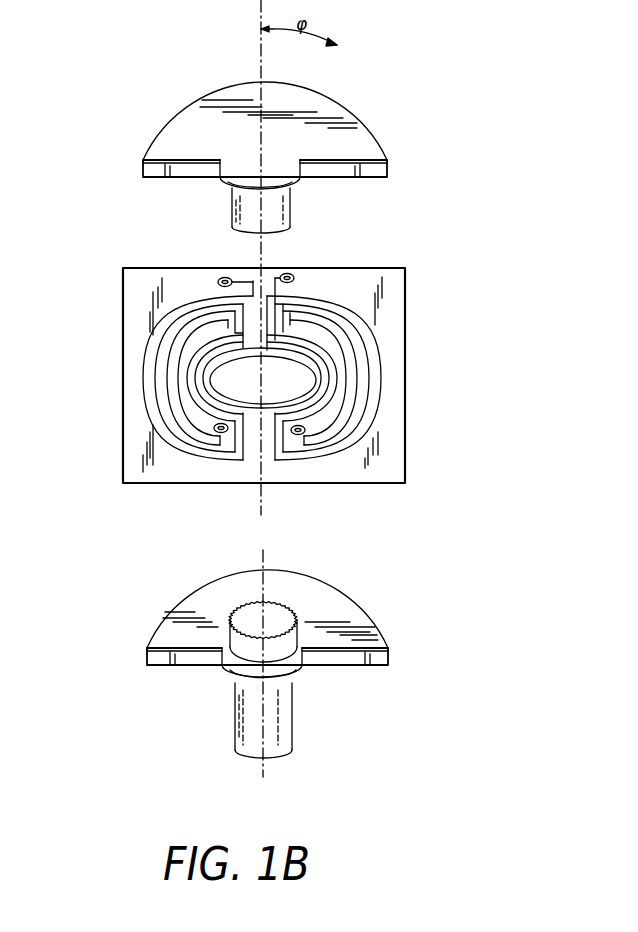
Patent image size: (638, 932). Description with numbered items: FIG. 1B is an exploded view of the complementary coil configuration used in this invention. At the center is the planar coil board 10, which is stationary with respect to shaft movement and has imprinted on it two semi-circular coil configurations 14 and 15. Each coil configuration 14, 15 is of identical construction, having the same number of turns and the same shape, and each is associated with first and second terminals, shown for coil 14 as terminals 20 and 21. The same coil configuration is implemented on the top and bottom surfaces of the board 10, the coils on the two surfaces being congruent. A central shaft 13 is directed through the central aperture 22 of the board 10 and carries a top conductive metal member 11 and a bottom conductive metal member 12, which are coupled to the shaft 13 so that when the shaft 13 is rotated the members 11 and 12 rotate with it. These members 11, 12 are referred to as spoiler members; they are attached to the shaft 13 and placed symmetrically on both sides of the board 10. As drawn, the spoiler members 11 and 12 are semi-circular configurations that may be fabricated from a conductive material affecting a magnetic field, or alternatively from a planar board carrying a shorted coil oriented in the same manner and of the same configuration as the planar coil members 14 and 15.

The board 10 is at (395, 415).
The top conductive metal member 11 is at (368, 132).
The bottom conductive metal member 12 is at (366, 630).
The central shaft 13 is at (290, 727).
The semi-circular coil configuration 14 is at (375, 360).
The semi-circular coil configuration 15 is at (150, 365).
The first terminal 20 is at (292, 274).
The second terminal 21 is at (303, 432).
The central aperture 22 is at (296, 375).